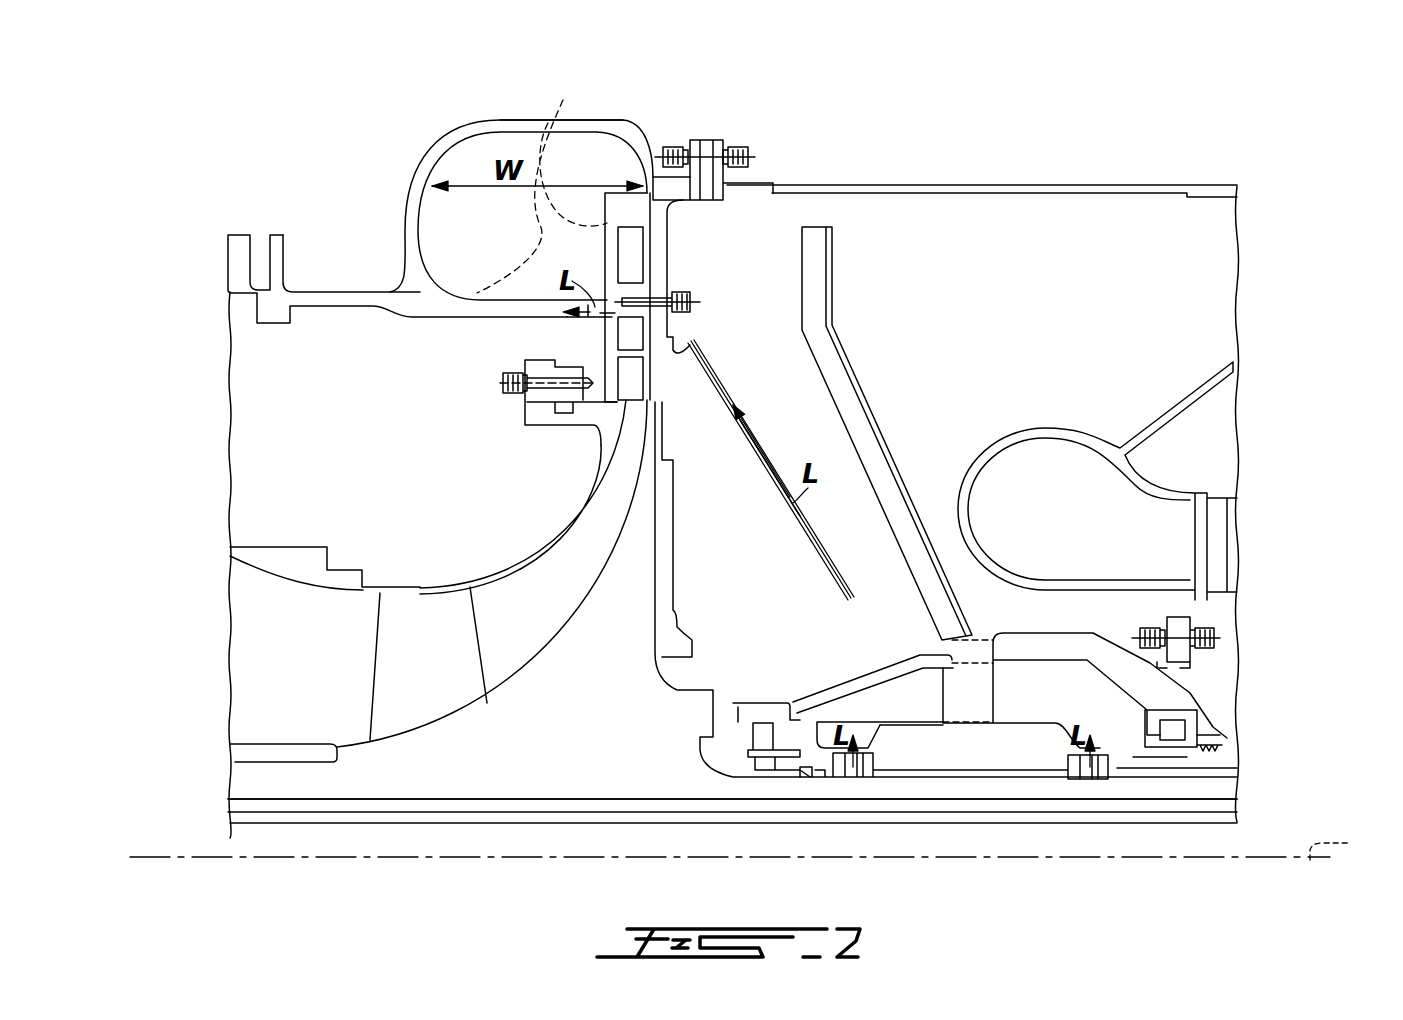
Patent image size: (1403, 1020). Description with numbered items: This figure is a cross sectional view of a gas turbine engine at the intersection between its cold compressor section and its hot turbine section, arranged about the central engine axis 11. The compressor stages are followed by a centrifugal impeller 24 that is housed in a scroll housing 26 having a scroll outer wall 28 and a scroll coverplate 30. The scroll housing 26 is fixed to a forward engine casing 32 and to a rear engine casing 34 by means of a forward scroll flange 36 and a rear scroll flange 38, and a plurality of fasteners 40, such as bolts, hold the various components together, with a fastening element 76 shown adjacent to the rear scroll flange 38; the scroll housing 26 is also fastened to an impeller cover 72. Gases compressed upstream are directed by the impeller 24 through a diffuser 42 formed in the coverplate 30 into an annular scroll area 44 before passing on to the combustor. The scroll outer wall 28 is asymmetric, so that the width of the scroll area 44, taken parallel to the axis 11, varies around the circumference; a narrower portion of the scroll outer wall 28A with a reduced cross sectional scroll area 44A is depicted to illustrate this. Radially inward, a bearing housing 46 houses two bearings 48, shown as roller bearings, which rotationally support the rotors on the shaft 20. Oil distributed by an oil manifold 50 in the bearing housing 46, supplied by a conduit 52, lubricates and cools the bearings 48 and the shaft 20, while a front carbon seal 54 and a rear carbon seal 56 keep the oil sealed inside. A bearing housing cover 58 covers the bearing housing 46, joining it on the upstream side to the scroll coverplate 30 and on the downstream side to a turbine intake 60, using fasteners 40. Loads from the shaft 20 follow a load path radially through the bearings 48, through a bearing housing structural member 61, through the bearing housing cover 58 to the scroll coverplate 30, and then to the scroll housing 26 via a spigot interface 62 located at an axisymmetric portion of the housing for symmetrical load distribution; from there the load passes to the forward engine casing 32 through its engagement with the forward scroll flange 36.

The central engine axis 11 is at (1344, 847).
The shaft 20 is at (1130, 838).
The centrifugal impeller 24 is at (397, 707).
The scroll housing 26 is at (512, 112).
The scroll outer wall 28 is at (468, 137).
The narrower portion of the scroll outer wall 28A is at (563, 100).
The scroll coverplate 30 is at (663, 378).
The forward engine casing 32 is at (243, 232).
The rear engine casing 34 is at (1143, 193).
The forward scroll flange 36 is at (292, 292).
The rear scroll flange 38 is at (688, 152).
The fasteners 40 is at (738, 150).
The diffuser 42 is at (633, 380).
The annular scroll area 44 is at (482, 252).
The reduced cross sectional scroll area 44A is at (614, 172).
The bearing housing 46 is at (798, 677).
The bearings 48 is at (847, 760).
The oil manifold 50 is at (833, 580).
The conduit 52 is at (867, 437).
The front carbon seal 54 is at (767, 740).
The rear carbon seal 56 is at (1180, 737).
The bearing housing cover 58 is at (753, 447).
The turbine intake 60 is at (1140, 485).
The bearing housing structural member 61 is at (873, 730).
The spigot interface 62 is at (573, 320).
The impeller cover 72 is at (420, 587).
The bracket 76 is at (708, 200).